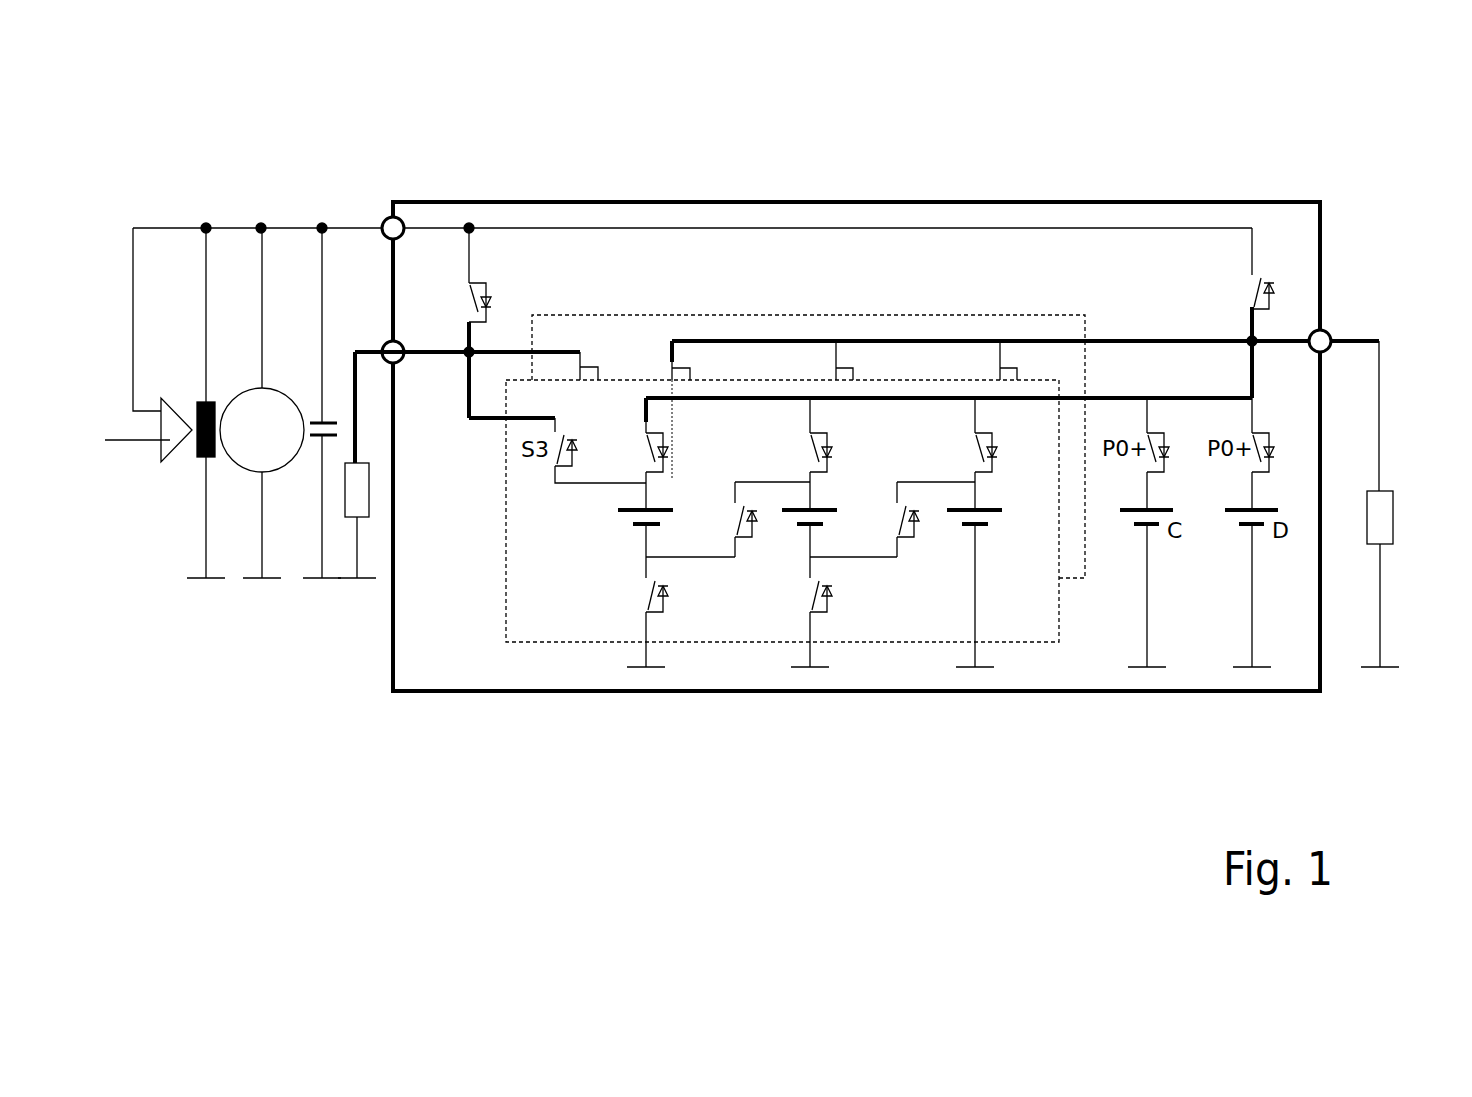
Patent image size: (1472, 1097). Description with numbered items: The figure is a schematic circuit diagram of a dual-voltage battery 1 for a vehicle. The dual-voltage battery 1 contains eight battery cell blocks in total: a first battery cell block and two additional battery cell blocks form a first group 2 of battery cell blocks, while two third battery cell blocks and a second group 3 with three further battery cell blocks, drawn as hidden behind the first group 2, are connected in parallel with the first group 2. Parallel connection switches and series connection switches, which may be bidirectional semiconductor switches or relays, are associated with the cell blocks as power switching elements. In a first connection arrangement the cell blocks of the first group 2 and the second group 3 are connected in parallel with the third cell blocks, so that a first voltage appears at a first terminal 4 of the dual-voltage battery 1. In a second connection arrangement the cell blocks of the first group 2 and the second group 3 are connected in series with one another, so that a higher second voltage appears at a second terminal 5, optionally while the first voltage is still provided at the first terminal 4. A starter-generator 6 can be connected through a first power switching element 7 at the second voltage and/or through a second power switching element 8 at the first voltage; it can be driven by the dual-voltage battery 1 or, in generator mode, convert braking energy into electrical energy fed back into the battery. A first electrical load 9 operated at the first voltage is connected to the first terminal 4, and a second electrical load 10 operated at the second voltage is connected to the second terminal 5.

The dual-voltage battery 1 is at (937, 197).
The first group of battery cell blocks 2 is at (570, 646).
The second group of battery cell blocks 3 is at (714, 310).
The first terminal 4 is at (1332, 326).
The second terminal 5 is at (384, 251).
The starter-generator 6 is at (272, 440).
The first power switching element 7 is at (499, 286).
The second power switching element 8 is at (1242, 287).
The first electrical load 9 is at (1398, 516).
The second electrical load 10 is at (372, 488).